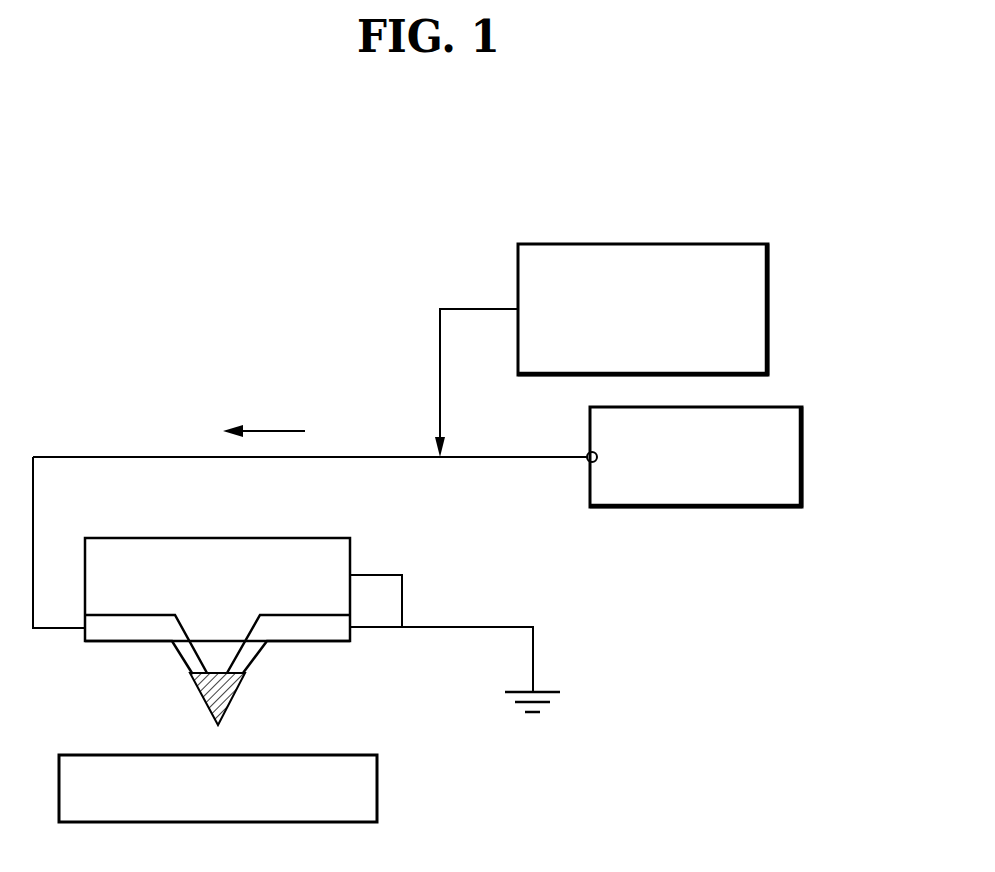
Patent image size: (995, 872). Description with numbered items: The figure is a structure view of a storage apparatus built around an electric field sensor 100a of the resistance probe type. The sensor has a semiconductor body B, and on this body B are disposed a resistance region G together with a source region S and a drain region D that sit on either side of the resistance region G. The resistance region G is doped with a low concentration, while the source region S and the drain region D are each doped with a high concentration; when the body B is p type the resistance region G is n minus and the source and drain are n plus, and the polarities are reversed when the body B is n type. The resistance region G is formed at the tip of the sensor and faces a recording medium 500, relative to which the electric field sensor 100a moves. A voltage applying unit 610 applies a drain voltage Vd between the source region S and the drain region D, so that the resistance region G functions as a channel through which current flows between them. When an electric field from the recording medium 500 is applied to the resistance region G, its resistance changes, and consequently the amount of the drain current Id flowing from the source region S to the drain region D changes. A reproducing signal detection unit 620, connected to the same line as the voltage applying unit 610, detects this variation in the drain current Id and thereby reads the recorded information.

The electric field sensor 100a is at (302, 606).
The body B is at (208, 548).
The drain region D is at (110, 641).
The source region S is at (300, 641).
The resistance region G is at (203, 698).
The recording medium 500 is at (378, 788).
The voltage applying unit 610 is at (804, 458).
The reproducing signal detection unit 620 is at (770, 318).
The drain voltage Vd is at (573, 442).
The drain current Id is at (264, 416).